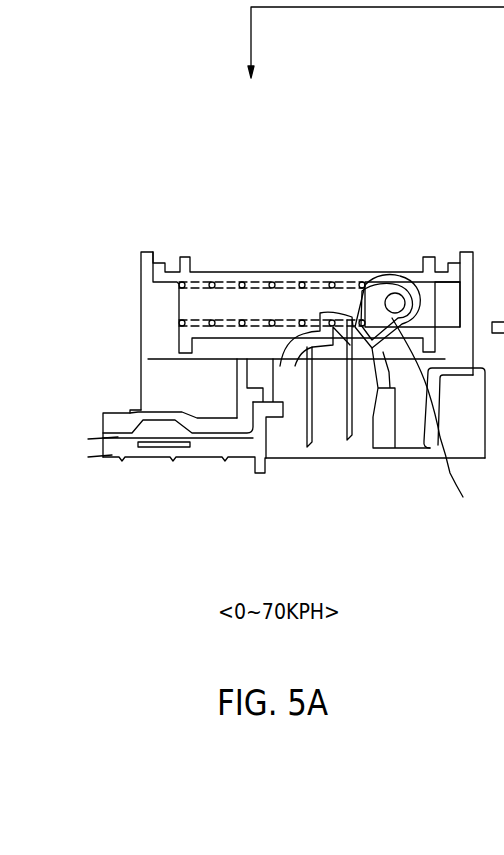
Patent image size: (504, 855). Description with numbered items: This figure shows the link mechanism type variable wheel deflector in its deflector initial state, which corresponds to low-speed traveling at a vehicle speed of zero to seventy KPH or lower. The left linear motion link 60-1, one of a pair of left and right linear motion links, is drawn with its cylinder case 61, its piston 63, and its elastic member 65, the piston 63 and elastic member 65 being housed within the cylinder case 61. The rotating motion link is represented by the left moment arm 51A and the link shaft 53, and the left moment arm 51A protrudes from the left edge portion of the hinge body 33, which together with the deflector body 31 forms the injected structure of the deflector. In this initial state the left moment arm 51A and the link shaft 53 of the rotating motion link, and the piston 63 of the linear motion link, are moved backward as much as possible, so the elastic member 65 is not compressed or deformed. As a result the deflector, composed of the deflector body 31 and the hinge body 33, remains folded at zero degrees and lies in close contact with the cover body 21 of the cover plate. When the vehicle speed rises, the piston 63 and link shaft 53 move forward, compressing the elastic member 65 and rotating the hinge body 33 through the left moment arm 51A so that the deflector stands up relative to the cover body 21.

The left linear motion link 60-1 is at (160, 170).
The cylinder case 61 is at (183, 257).
The elastic member 65 is at (263, 258).
The piston 63 is at (427, 293).
The link shaft 53 is at (383, 283).
The hinge body 33 is at (292, 348).
The left moment arm 51A is at (439, 422).
The cover body 21 is at (115, 423).
The deflector body 31 is at (131, 445).